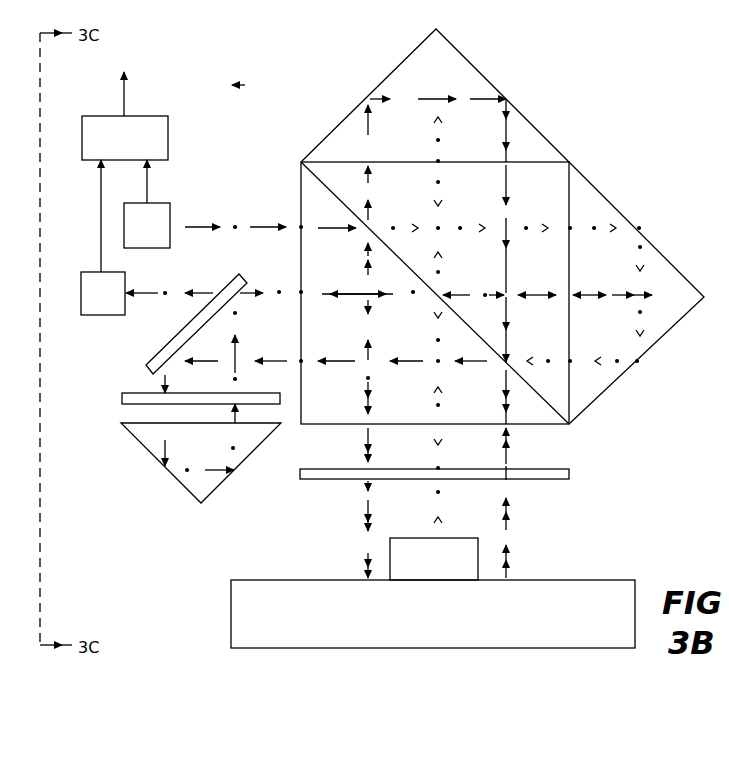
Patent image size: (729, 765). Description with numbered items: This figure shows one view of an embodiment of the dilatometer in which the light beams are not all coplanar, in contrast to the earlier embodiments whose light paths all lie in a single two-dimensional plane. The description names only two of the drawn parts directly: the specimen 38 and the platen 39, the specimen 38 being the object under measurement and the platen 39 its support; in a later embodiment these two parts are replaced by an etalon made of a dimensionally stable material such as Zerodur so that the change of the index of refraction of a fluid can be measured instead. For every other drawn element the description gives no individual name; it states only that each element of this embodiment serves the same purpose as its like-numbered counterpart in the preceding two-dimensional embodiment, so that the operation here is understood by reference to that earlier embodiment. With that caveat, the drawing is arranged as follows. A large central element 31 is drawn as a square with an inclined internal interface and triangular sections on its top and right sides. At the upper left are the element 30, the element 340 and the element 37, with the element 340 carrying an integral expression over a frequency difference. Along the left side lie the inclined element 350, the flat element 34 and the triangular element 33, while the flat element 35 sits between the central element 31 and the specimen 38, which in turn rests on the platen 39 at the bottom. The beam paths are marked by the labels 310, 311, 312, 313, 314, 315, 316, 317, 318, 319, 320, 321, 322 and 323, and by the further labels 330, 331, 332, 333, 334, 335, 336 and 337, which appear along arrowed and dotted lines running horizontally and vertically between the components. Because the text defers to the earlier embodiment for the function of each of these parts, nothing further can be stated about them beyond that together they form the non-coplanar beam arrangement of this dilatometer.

The polarizing beam splitter prism assembly 31 is at (413, 63).
The light source 30 is at (157, 212).
The reflecting prism 33 is at (238, 456).
The wave plate 34 is at (240, 396).
The wave plate 35 is at (566, 468).
The photodetector 37 is at (93, 308).
The specimen 38 is at (446, 569).
The platen 39 is at (446, 627).
The signal processor 340 is at (166, 140).
The mirror 350 is at (250, 270).
The input light beam 310 is at (243, 238).
The light beam in prism 311 is at (343, 220).
The light beam to sample 312 is at (341, 503).
The light beam 313 is at (360, 105).
The light beam 314 is at (523, 119).
The light beam from sample 315 is at (525, 503).
The light beam 316 is at (462, 373).
The light beam 317 is at (211, 360).
The light beam 318 is at (155, 467).
The light beam 319 is at (226, 482).
The light beam 320 is at (200, 281).
The light beam 321 is at (602, 287).
The light beam 322 is at (661, 318).
The light beam to detector 323 is at (145, 305).
The reflection point 330 is at (635, 238).
The reflection point 331 is at (602, 371).
The light beam 332 is at (374, 304).
The light beam 333 is at (456, 527).
The light beam 334 is at (484, 110).
The light beam 335 is at (423, 110).
The light beam 336 is at (414, 515).
The light beam 337 is at (473, 284).